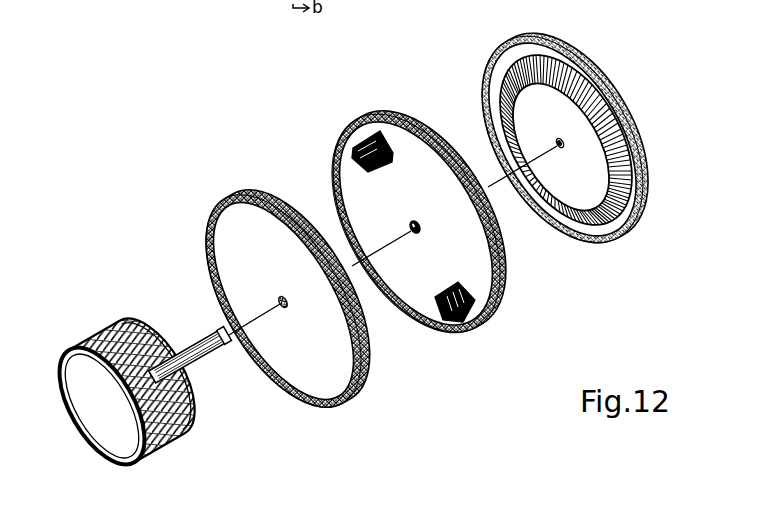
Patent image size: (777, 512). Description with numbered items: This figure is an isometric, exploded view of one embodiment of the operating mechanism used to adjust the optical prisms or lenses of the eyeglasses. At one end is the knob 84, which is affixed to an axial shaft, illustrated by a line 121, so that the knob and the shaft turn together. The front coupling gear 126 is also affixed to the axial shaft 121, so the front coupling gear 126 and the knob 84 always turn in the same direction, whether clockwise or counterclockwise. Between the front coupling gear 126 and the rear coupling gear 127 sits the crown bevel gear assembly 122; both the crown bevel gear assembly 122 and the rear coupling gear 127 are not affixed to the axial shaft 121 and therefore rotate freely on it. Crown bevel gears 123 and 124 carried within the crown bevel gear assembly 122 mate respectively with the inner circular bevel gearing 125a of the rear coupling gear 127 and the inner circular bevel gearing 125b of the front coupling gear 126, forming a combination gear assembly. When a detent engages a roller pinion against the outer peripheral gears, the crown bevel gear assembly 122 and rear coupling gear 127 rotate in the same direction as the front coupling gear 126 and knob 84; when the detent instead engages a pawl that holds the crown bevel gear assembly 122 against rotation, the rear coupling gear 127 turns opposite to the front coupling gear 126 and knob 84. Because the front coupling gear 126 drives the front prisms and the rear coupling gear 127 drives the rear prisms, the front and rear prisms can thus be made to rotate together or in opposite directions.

The knob 84 is at (77, 395).
The axial shaft 121 is at (487, 187).
The crown bevel gear assembly 122 is at (415, 219).
The crown bevel gear 123 is at (372, 133).
The crown bevel gear 124 is at (483, 300).
The inner circular bevel gearing 125a is at (562, 135).
The inner circular bevel gearing 125b is at (277, 197).
The front coupling gear 126 is at (276, 295).
The rear coupling gear 127 is at (550, 40).